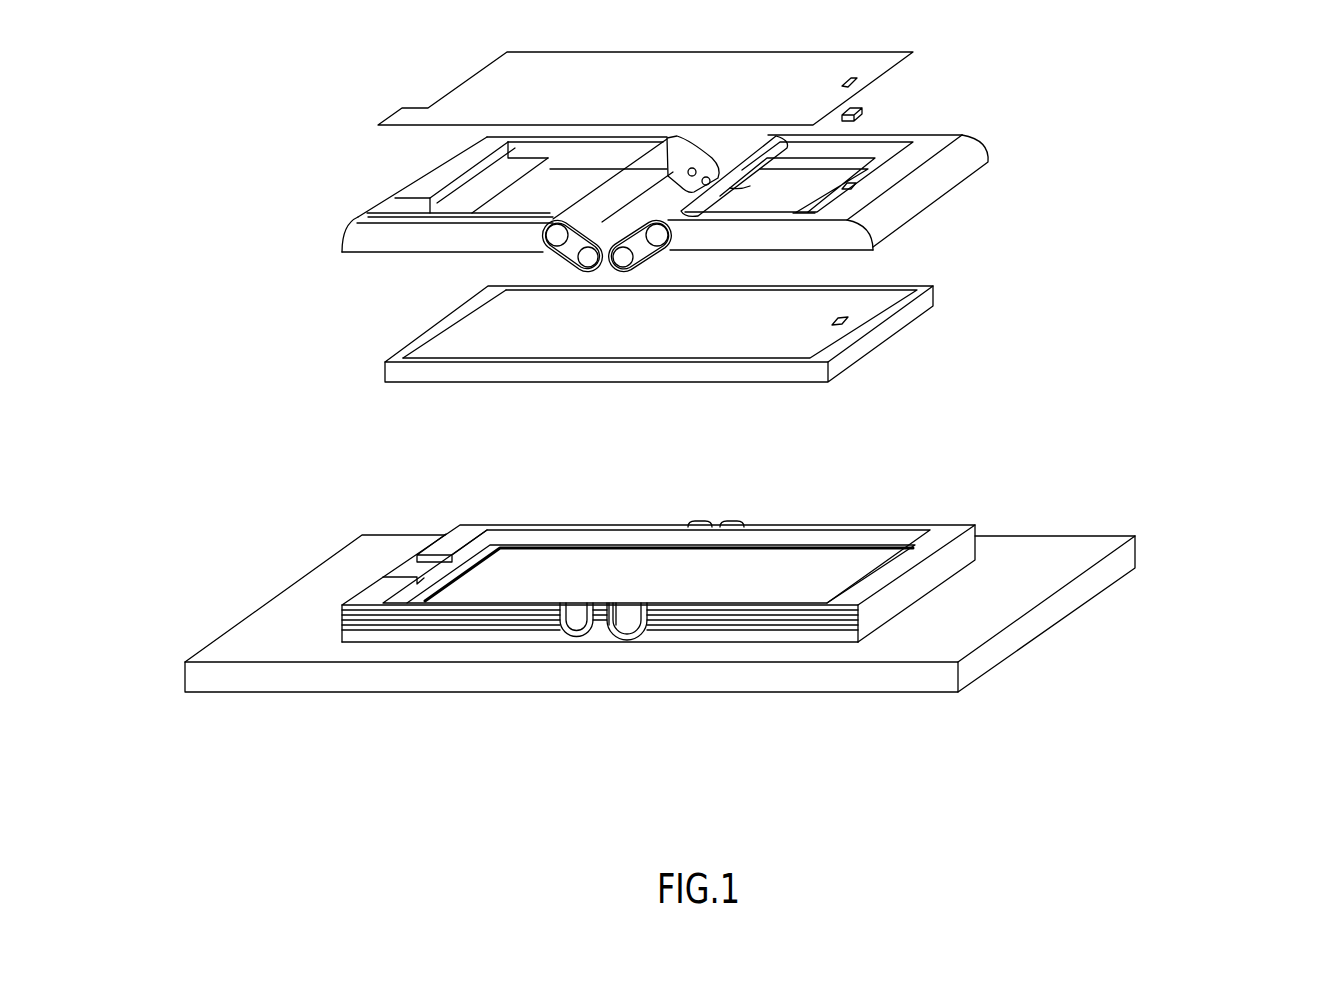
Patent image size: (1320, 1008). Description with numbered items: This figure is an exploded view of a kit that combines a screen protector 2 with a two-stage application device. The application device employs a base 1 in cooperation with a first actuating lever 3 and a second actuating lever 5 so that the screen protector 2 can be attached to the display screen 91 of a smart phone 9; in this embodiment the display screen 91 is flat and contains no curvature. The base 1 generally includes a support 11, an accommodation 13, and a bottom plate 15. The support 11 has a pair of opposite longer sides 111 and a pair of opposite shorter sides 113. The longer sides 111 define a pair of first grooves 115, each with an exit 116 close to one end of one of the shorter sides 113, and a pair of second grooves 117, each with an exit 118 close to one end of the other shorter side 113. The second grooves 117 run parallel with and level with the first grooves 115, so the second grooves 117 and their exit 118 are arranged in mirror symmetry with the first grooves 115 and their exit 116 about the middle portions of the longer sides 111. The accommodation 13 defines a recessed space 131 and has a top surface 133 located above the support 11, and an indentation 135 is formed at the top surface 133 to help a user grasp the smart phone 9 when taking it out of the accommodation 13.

The base 1 is at (1082, 481).
The screen protector 2 is at (467, 80).
The first actuating lever 3 is at (980, 147).
The second actuating lever 5 is at (433, 170).
The smart phone 9 is at (933, 293).
The display screen 91 is at (433, 323).
The support 11 is at (903, 743).
The accommodation 13 is at (557, 470).
The bottom plate 15 is at (1135, 568).
The longer sides 111 is at (482, 642).
The shorter sides 113 is at (917, 595).
The first grooves 115 is at (655, 633).
The exit 116 is at (847, 618).
The second grooves 117 is at (543, 640).
The exit 118 is at (353, 620).
The recessed space 131 is at (552, 543).
The top surface 133 is at (460, 538).
The indentation 135 is at (410, 570).